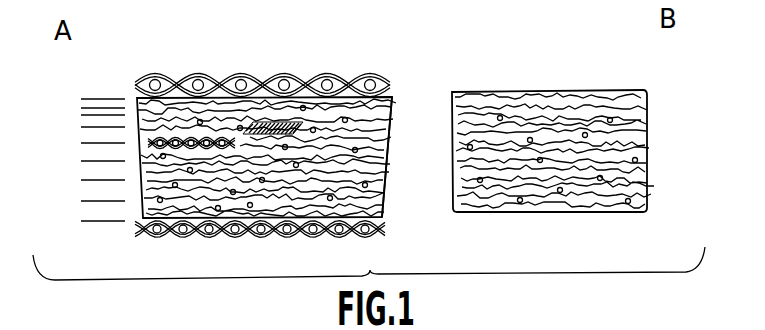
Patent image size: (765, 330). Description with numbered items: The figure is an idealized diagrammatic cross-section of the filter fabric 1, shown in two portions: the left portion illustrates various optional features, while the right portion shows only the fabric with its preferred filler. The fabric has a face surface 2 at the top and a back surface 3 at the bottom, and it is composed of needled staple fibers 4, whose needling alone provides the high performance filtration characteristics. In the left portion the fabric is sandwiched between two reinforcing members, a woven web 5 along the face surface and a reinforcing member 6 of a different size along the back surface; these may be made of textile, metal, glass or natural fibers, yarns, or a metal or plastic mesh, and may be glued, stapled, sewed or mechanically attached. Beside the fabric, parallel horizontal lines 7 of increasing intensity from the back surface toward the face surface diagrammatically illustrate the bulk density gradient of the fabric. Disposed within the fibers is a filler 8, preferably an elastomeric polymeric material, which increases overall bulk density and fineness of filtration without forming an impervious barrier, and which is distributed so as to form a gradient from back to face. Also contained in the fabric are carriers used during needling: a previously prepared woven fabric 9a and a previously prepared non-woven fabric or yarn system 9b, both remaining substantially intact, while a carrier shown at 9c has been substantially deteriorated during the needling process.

The filter fabric 1 is at (132, 61).
The face surface 2 is at (224, 97).
The back surface 3 is at (300, 229).
The needled staple fibers 4 is at (343, 212).
The woven web 5 is at (207, 75).
The reinforcing member 6 is at (233, 240).
The parallel horizontal lines 7 is at (78, 82).
The filler 8 is at (303, 106).
The previously prepared woven fabric 9a is at (172, 150).
The previously prepared non-woven fabric or yarn system 9b is at (285, 123).
The substantially deteriorated carrier 9c is at (388, 104).